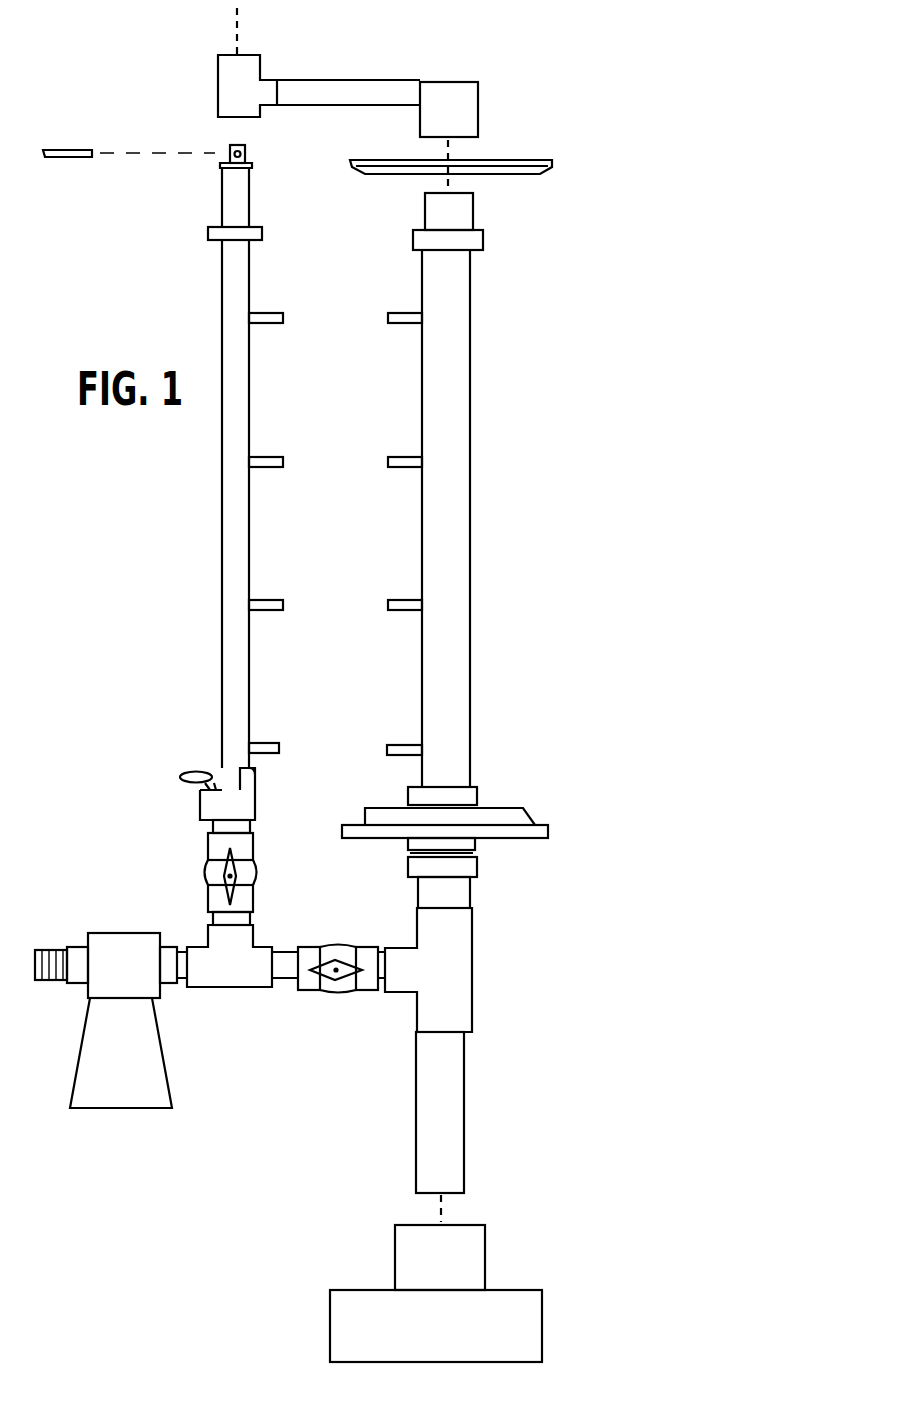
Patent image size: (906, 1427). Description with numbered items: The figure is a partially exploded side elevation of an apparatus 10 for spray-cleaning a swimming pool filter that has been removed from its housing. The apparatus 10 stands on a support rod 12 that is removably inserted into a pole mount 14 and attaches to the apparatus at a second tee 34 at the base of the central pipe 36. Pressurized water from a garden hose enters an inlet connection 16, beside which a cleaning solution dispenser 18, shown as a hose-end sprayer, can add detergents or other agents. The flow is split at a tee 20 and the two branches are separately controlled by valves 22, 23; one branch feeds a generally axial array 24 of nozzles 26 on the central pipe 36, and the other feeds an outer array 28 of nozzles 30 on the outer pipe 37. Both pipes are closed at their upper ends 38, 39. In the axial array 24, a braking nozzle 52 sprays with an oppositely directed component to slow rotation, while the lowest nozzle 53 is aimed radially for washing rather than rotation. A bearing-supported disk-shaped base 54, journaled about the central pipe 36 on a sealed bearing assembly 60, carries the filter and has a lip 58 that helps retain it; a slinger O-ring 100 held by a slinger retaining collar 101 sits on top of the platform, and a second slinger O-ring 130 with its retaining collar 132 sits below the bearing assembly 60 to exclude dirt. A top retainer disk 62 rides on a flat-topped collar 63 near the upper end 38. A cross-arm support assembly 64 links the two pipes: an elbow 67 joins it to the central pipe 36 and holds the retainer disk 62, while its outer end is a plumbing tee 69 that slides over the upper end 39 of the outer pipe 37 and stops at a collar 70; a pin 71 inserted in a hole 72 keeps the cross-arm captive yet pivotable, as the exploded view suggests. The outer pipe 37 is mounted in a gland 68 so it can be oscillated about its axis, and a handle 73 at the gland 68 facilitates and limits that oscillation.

The apparatus 10 is at (522, 380).
The support rod 12 is at (465, 1078).
The pole mount 14 is at (485, 1250).
The inlet connection 16 is at (37, 950).
The cleaning solution dispenser 18 is at (128, 1107).
The tee 20 is at (232, 987).
The inlet valve 22 is at (342, 992).
The valve 23 is at (208, 878).
The axial array 24 is at (362, 695).
The nozzles 26 is at (413, 470).
The outer array 28 is at (284, 390).
The outer nozzles 30 is at (266, 314).
The second tee 34 is at (472, 965).
The central pipe 36 is at (472, 500).
The outer pipe 37 is at (222, 493).
The upper end of central pipe 38 is at (425, 215).
The upper end of outer pipe 39 is at (222, 180).
The braking nozzle 52 is at (403, 310).
The lowest nozzle 53 is at (408, 745).
The base 54 is at (512, 808).
The lip 58 is at (540, 828).
The sealed bearing assembly 60 is at (492, 854).
The top retainer disk 62 is at (535, 160).
The collar 63 is at (485, 240).
The cross-arm support assembly 64 is at (372, 77).
The elbow 67 is at (480, 108).
The gland 68 is at (200, 806).
The plumbing tee 69 is at (218, 73).
The collar 70 is at (208, 233).
The pin 71 is at (65, 158).
The hole 72 is at (233, 153).
The handle 73 is at (190, 768).
The slinger O-ring 100 is at (408, 804).
The slinger retaining collar 101 is at (470, 790).
The second slinger O-ring 130 is at (410, 850).
The retaining collar 132 is at (478, 877).